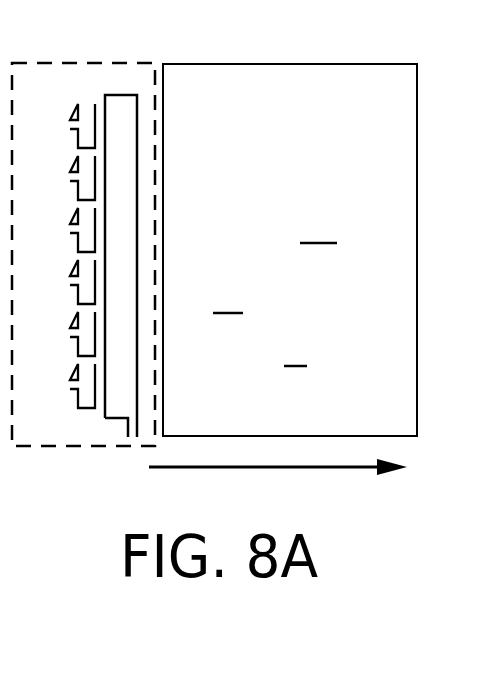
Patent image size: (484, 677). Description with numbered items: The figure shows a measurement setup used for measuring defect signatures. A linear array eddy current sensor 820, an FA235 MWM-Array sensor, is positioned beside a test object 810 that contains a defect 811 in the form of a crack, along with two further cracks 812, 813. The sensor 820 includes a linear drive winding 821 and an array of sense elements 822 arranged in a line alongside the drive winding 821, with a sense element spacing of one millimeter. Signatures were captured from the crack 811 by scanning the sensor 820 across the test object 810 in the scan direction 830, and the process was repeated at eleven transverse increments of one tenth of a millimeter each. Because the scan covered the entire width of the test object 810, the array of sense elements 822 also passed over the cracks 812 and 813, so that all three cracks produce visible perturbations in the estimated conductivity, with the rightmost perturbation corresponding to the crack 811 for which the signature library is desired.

The test object 810 is at (390, 147).
The defect (crack) 811 is at (323, 235).
The crack 812 is at (211, 303).
The crack 813 is at (288, 377).
The linear array eddy current sensor 820 is at (65, 94).
The linear drive winding 821 is at (120, 87).
The sense elements 822 is at (76, 412).
The scan direction 830 is at (328, 470).